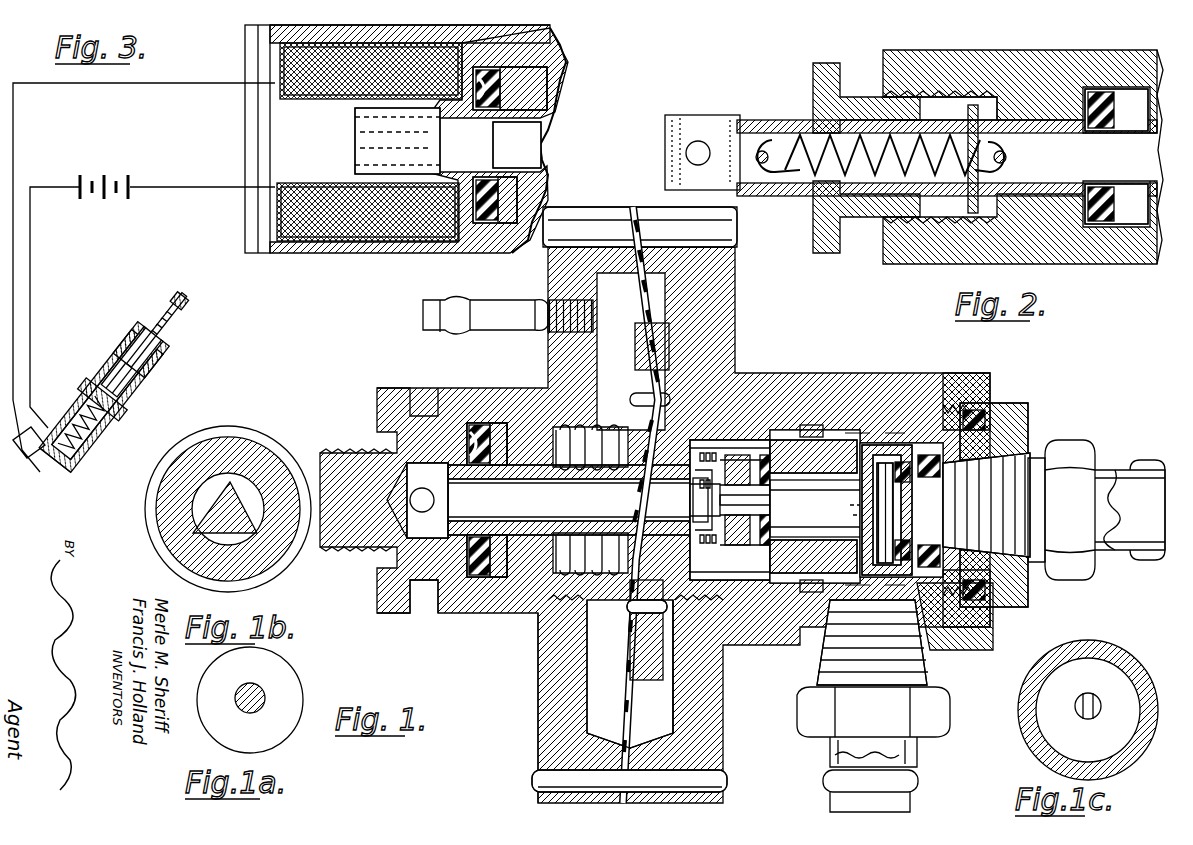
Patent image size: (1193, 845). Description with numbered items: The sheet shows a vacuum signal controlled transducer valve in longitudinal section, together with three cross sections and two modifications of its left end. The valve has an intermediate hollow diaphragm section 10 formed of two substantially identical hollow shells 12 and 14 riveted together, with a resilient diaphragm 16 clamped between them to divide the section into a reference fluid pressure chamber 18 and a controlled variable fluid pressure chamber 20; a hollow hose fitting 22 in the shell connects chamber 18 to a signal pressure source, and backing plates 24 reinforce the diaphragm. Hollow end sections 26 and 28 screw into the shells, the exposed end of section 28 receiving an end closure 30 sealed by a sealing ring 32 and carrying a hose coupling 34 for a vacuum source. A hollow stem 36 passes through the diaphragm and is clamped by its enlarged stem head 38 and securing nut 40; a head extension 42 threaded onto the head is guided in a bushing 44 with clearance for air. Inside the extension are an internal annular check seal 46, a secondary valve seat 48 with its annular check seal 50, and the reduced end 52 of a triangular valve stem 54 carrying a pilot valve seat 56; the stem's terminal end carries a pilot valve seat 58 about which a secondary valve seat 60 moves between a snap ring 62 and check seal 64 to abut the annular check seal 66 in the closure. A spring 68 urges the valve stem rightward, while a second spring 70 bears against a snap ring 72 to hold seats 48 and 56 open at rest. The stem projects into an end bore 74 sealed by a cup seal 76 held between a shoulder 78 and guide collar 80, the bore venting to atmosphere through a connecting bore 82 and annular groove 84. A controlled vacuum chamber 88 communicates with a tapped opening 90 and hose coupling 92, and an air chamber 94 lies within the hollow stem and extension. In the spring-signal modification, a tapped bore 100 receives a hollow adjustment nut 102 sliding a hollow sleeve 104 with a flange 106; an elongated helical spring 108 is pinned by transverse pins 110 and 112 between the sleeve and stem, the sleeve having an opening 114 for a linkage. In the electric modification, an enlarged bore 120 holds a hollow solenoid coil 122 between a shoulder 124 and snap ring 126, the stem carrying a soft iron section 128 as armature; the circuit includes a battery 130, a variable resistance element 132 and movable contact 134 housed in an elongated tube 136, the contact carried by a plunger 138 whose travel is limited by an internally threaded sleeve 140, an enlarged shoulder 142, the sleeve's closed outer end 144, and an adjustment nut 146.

In FIG. 1, the hollow diaphragm section 10 is at (772, 330).
In FIG. 1, the hollow shell 12 is at (545, 742).
In FIG. 1, the hollow shell 14 is at (710, 740).
In FIG. 1, the resilient diaphragm 16 is at (628, 720).
In FIG. 1, the reference fluid pressure chamber 18 is at (600, 665).
In FIG. 1, the controlled variable fluid pressure chamber 20 is at (665, 705).
In FIG. 1, the hose fitting 22 is at (423, 318).
In FIG. 1, the backing plates 24 is at (637, 357).
In FIG. 3, the hollow end section 26 is at (550, 38).
In FIG. 2, the hollow end section 26 is at (925, 270).
In FIG. 1, the hollow end section 26 is at (462, 605).
In FIG. 1, the hollow end section 28 is at (955, 378).
In FIG. 1, the end closure 30 is at (1028, 425).
In FIG. 1, the sealing ring 32 is at (985, 410).
In FIG. 1, the hose coupling 34 is at (1090, 470).
In FIG. 3, the stem 36 is at (545, 165).
In FIG. 2, the stem 36 is at (1050, 188).
In FIG. 1, the stem 36 is at (600, 520).
In FIG. 1, the stem head 38 is at (690, 510).
In FIG. 1, the securing nut 40 is at (612, 425).
In FIG. 1, the head extension 42 is at (838, 440).
In FIG. 1B, the head extension 42 is at (170, 522).
In FIG. 1, the bushing 44 is at (815, 425).
In FIG. 1B, the bushing 44 is at (290, 562).
In FIG. 1, the internal annular check seal 46 is at (790, 535).
In FIG. 1, the secondary valve seat 48 is at (745, 440).
In FIG. 1A, the secondary valve seat 48 is at (280, 740).
In FIG. 1, the annular check seal 50 is at (755, 492).
In FIG. 1, the reduced end 52 is at (745, 510).
In FIG. 1A, the reduced end 52 is at (262, 692).
In FIG. 1, the valve stem 54 is at (840, 506).
In FIG. 1B, the valve stem 54 is at (240, 482).
In FIG. 1, the pilot valve seat 56 is at (709, 469).
In FIG. 1, the pilot valve seat 58 is at (880, 490).
In FIG. 1C, the pilot valve seat 58 is at (1050, 722).
In FIG. 1, the secondary valve seat 60 is at (910, 443).
In FIG. 1C, the secondary valve seat 60 is at (1085, 643).
In FIG. 1, the snap ring 62 is at (870, 445).
In FIG. 1, the check seal 64 is at (900, 480).
In FIG. 1, the annular check seal 66 is at (905, 548).
In FIG. 1, the spring 68 is at (690, 492).
In FIG. 1, the second spring 70 is at (618, 583).
In FIG. 3, the snap ring 72 is at (560, 58).
In FIG. 1, the snap ring 72 is at (545, 530).
In FIG. 2, the longitudinal end bore 74 is at (1090, 130).
In FIG. 1, the longitudinal end bore 74 is at (430, 482).
In FIG. 3, the cup seal 76 is at (540, 195).
In FIG. 2, the cup seal 76 is at (1112, 200).
In FIG. 1, the cup seal 76 is at (495, 540).
In FIG. 1, the shoulder 78 is at (478, 425).
In FIG. 3, the guide collar 80 is at (555, 108).
In FIG. 2, the guide collar 80 is at (1150, 100).
In FIG. 1, the guide collar 80 is at (527, 460).
In FIG. 1, the connecting bore 82 is at (438, 505).
In FIG. 1, the annular groove 84 is at (410, 390).
In FIG. 1, the controlled vacuum chamber 88 is at (922, 585).
In FIG. 1, the tapped opening 90 is at (945, 635).
In FIG. 1, the hose coupling 92 is at (925, 735).
In FIG. 1, the air chamber 94 is at (725, 558).
In FIG. 2, the tapped bore 100 is at (895, 90).
In FIG. 2, the hollow adjustment nut 102 is at (825, 248).
In FIG. 2, the hollow sleeve 104 is at (765, 125).
In FIG. 2, the annular projecting flange 106 is at (972, 110).
In FIG. 2, the elongated helical spring 108 is at (820, 180).
In FIG. 2, the transverse pin 110 is at (790, 140).
In FIG. 2, the transverse pin 112 is at (1008, 162).
In FIG. 2, the opening 114 is at (690, 153).
In FIG. 3, the enlarged bore 120 is at (245, 118).
In FIG. 3, the hollow solenoid coil 122 is at (315, 155).
In FIG. 3, the shoulder 124 is at (458, 242).
In FIG. 3, the snap ring 126 is at (260, 235).
In FIG. 3, the soft iron section 128 is at (355, 128).
In FIG. 3, the battery 130 is at (130, 187).
In FIG. 3, the variable resistance element 132 is at (140, 425).
In FIG. 3, the movable contact 134 is at (45, 470).
In FIG. 3, the elongated tube 136 is at (83, 424).
In FIG. 3, the plunger 138 is at (157, 330).
In FIG. 3, the internally threaded sleeve 140 is at (103, 399).
In FIG. 3, the enlarged shoulder 142 is at (141, 350).
In FIG. 3, the closed outer end 144 is at (118, 378).
In FIG. 3, the adjustment nut 146 is at (180, 295).